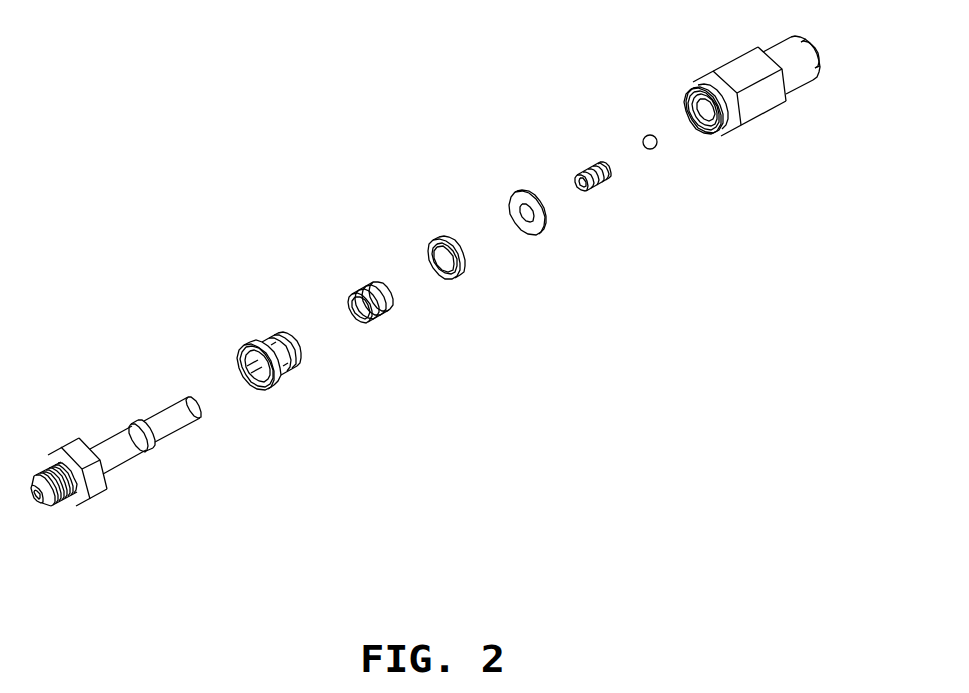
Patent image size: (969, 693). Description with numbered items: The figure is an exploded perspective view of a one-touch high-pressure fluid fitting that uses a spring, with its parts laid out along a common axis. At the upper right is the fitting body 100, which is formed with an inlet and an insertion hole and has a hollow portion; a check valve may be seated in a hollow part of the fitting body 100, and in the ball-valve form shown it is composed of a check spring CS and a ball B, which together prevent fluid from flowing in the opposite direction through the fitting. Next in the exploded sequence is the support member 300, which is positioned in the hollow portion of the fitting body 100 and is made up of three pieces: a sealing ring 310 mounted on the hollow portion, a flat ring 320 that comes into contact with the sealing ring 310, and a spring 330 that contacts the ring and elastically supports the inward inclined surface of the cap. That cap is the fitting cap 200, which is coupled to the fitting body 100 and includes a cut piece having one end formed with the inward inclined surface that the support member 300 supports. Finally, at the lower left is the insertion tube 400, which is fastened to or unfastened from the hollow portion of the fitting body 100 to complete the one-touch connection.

The fitting body 100 is at (758, 97).
The fitting cap 200 is at (285, 380).
The support member 300 is at (580, 335).
The sealing ring 310 is at (528, 237).
The flat ring 320 is at (465, 270).
The spring 330 is at (383, 317).
The insertion tube 400 is at (130, 453).
The ball B is at (654, 149).
The check spring CS is at (603, 187).